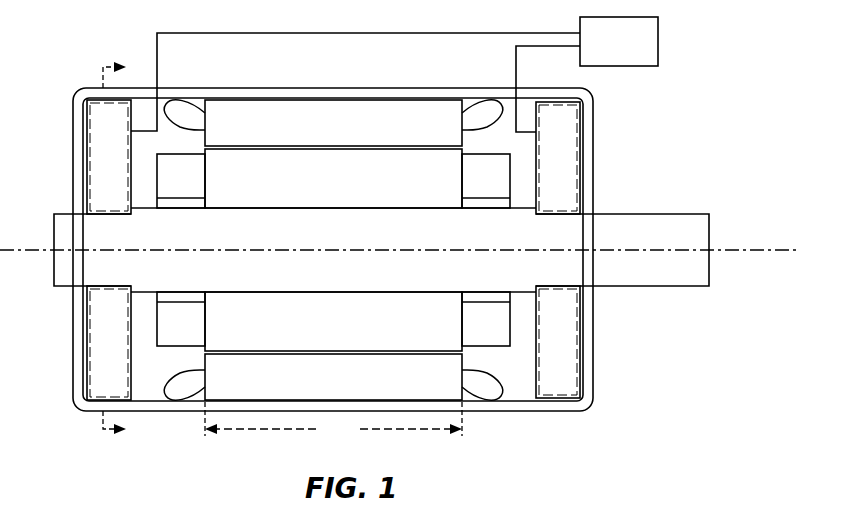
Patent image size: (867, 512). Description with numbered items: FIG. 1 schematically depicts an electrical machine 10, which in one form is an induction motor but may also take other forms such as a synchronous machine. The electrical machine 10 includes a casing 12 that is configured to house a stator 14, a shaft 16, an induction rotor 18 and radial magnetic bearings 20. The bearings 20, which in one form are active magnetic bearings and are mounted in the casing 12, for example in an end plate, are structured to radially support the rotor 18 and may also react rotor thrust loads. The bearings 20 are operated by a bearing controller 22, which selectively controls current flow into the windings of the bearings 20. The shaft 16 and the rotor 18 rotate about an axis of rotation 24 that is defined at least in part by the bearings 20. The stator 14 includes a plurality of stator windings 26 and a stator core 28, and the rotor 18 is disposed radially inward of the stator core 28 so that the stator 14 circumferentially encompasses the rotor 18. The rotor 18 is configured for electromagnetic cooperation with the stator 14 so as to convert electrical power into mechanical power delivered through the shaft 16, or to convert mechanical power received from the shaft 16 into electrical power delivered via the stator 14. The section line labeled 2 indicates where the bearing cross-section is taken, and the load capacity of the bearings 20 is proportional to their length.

The electrical machine 10 is at (722, 44).
The casing 12 is at (284, 89).
The stator 14 is at (333, 116).
The shaft 16 is at (663, 213).
The rotor 18 is at (152, 366).
The bearings 20 is at (573, 166).
The bearing controller 22 is at (631, 53).
The axis of rotation 24 is at (740, 254).
The stator windings 26 is at (175, 108).
The stator core 28 is at (200, 391).
The section line 2- 2 is at (122, 254).